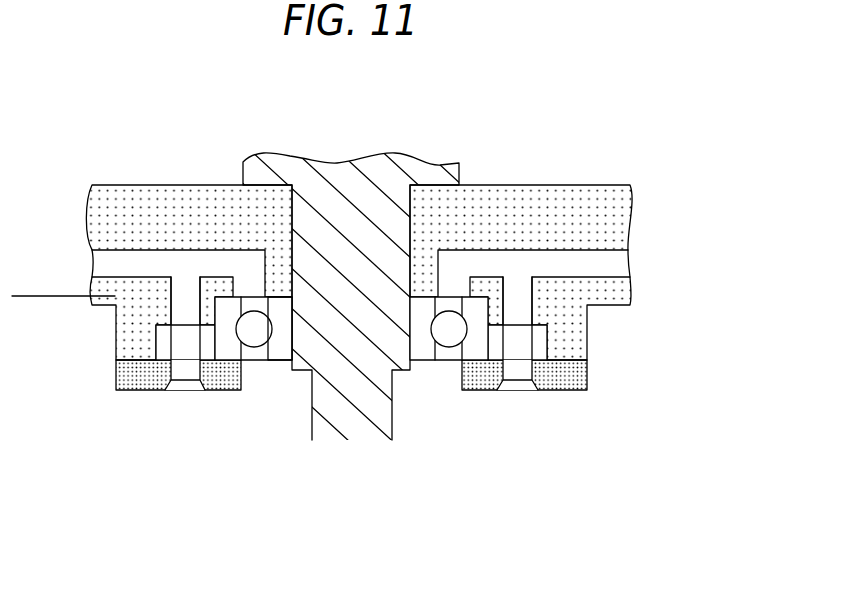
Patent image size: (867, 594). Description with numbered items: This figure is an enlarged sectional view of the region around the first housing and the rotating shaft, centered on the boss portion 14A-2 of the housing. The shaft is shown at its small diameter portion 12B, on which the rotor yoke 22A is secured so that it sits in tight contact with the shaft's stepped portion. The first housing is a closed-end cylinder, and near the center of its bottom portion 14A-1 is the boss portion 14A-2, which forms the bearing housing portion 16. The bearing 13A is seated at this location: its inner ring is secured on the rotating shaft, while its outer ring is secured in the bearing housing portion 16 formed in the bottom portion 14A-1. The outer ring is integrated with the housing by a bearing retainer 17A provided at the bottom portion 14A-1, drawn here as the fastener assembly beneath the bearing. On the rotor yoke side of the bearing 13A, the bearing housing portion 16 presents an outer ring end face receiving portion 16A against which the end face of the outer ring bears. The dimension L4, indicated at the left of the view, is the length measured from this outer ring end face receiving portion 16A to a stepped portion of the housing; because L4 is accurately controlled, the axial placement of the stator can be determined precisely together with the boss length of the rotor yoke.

The small diameter portion 12B is at (343, 176).
The rotor yoke 22A is at (612, 218).
The bottom portion 14A-1 is at (613, 304).
The boss portion 14A-2 is at (116, 337).
The bearing housing portion 16 is at (488, 301).
The outer ring end face receiving portion 16A is at (222, 297).
The bearing 13A is at (281, 357).
The bearing retainer 17A is at (525, 386).
The length L4 is at (33, 180).